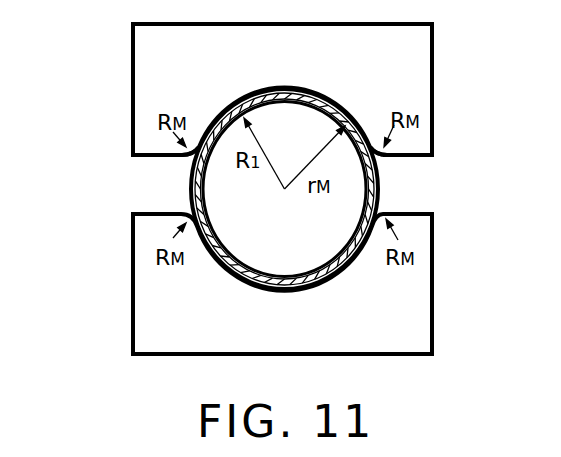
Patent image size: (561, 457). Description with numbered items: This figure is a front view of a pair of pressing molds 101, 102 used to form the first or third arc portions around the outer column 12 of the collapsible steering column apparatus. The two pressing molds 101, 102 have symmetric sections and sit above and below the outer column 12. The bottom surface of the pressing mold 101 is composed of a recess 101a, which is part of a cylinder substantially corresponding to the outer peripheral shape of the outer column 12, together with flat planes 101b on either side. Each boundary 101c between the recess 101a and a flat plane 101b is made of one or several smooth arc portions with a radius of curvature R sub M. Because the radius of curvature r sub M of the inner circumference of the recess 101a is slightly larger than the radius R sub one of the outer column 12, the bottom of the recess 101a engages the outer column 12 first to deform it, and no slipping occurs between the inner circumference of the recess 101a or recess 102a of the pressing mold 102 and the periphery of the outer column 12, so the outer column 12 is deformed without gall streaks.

The pressing mold 101 is at (413, 50).
The recess 101a is at (291, 86).
The flat planes 101b is at (136, 156).
The boundary 101c is at (194, 146).
The pressing mold 102 is at (413, 325).
The recess 102a is at (291, 292).
The outer column 12 is at (380, 182).